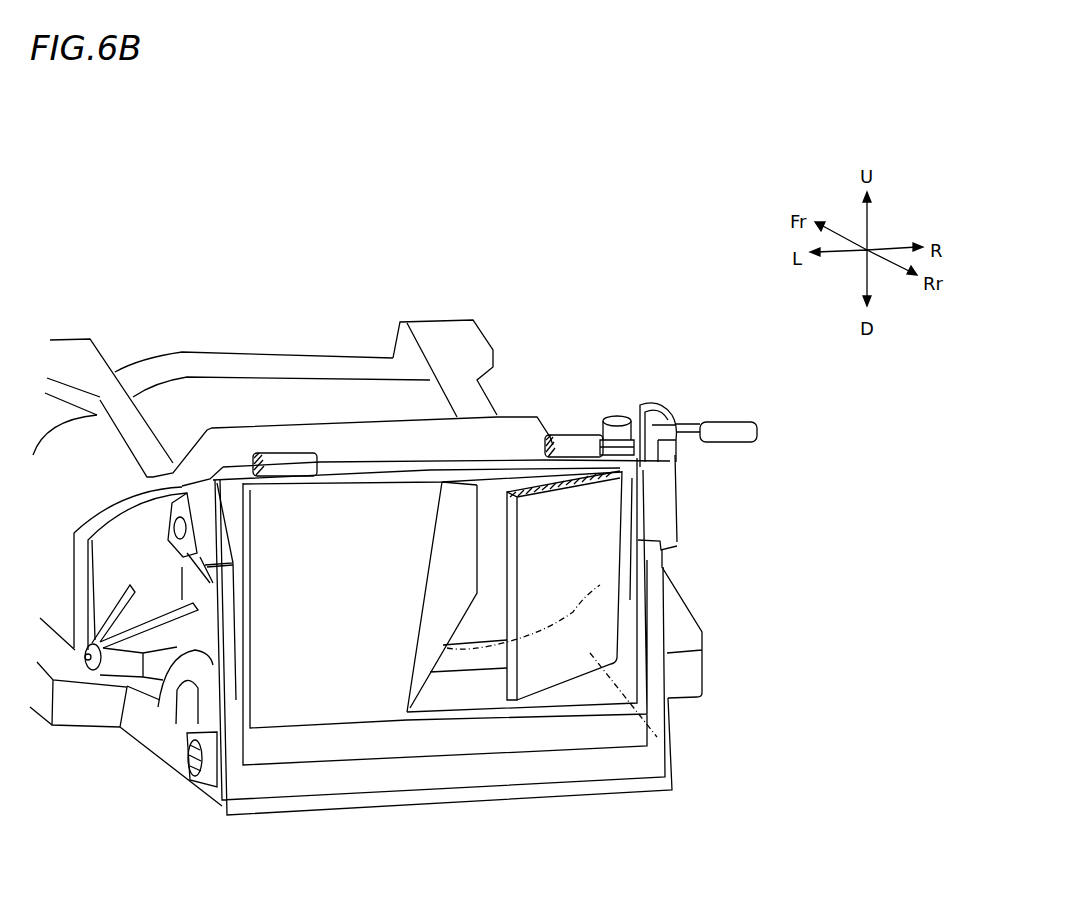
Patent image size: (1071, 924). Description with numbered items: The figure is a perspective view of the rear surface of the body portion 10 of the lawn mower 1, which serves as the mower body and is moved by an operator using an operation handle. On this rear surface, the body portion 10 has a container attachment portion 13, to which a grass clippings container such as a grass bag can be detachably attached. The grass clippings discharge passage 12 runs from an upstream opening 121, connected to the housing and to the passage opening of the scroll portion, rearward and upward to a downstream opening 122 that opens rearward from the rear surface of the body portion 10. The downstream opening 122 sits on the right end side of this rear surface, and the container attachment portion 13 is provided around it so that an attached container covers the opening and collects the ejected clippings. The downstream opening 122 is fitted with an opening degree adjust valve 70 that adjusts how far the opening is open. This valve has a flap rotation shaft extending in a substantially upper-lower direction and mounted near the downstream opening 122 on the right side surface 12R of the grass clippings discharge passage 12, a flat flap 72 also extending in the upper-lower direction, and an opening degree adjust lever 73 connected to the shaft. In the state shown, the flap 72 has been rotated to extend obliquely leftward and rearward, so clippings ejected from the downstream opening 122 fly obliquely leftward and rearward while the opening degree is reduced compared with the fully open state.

The lawn mower 1 is at (291, 484).
The body portion 10 is at (283, 337).
The container attachment portion 13 is at (335, 740).
The upstream opening 121 is at (620, 583).
The grass clippings discharge passage 12 is at (585, 678).
The right side surface 12R is at (624, 632).
The downstream opening 122 is at (516, 702).
The opening degree adjust valve 70 is at (660, 380).
The flap 72 is at (657, 737).
The opening degree adjust lever 73 is at (733, 424).